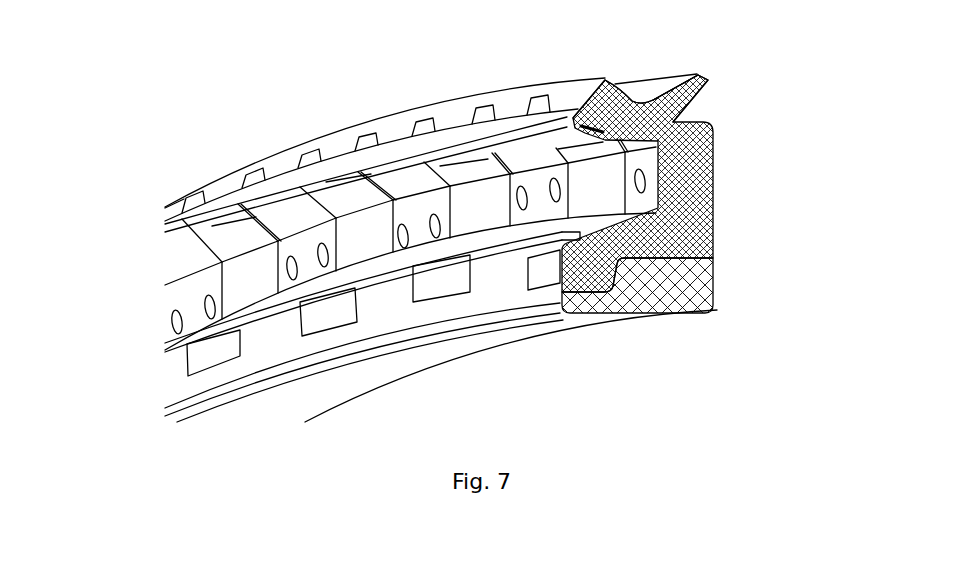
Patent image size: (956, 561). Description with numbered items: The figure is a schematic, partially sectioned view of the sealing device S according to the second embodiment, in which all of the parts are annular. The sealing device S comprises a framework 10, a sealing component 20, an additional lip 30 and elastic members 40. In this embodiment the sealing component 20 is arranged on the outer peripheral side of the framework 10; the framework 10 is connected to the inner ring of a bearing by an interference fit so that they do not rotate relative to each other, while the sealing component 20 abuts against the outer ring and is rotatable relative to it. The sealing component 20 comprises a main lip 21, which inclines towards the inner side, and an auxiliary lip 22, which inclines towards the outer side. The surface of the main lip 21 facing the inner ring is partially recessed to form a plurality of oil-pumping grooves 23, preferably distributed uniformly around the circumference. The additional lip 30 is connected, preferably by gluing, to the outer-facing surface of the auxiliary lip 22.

The sealing device S is at (262, 134).
The framework 10 is at (703, 287).
The sealing component 20 is at (700, 186).
The main lip 21 is at (620, 84).
The auxiliary lip 22 is at (690, 78).
The oil-pumping grooves 23 is at (455, 127).
The additional lip 30 is at (707, 82).
The elastic members 40 is at (533, 207).